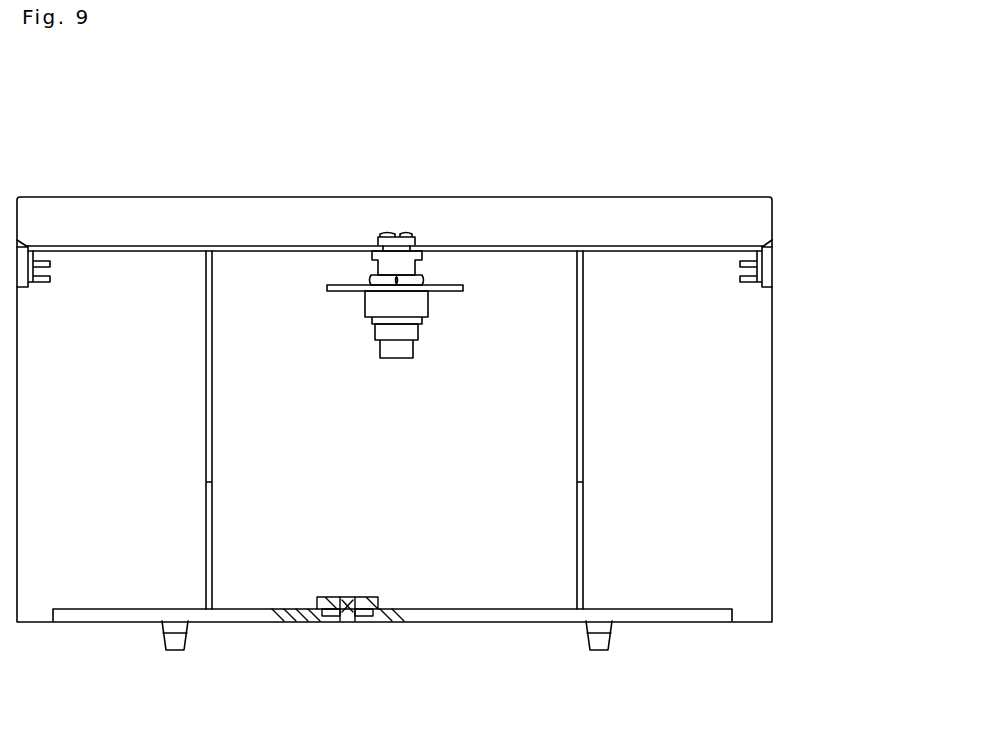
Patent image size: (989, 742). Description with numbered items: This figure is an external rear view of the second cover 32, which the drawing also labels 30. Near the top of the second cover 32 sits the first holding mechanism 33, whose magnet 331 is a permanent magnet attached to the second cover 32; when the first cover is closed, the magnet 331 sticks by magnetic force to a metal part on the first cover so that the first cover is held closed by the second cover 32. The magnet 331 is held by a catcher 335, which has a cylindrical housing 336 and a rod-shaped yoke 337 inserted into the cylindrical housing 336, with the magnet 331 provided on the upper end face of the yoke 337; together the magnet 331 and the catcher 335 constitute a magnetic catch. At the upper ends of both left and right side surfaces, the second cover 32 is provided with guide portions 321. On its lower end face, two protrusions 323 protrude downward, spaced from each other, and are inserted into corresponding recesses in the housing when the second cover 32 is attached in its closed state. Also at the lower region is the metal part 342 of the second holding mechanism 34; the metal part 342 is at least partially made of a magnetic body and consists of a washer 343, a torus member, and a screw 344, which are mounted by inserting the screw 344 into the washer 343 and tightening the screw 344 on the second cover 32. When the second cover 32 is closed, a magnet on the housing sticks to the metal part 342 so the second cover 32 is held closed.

The holding unit 30 is at (446, 411).
The second cover 32 is at (772, 393).
The guide portions 321 is at (24, 250).
The protrusions 323 is at (173, 642).
The first holding mechanism 33 is at (419, 229).
The magnet 331 is at (407, 237).
The catcher 335 is at (366, 337).
The cylindrical housing 336 is at (418, 333).
The yoke 337 is at (418, 246).
The second holding mechanism 34 is at (348, 667).
The metal part 342 is at (372, 627).
The washer 343 is at (332, 622).
The screw 344 is at (348, 622).